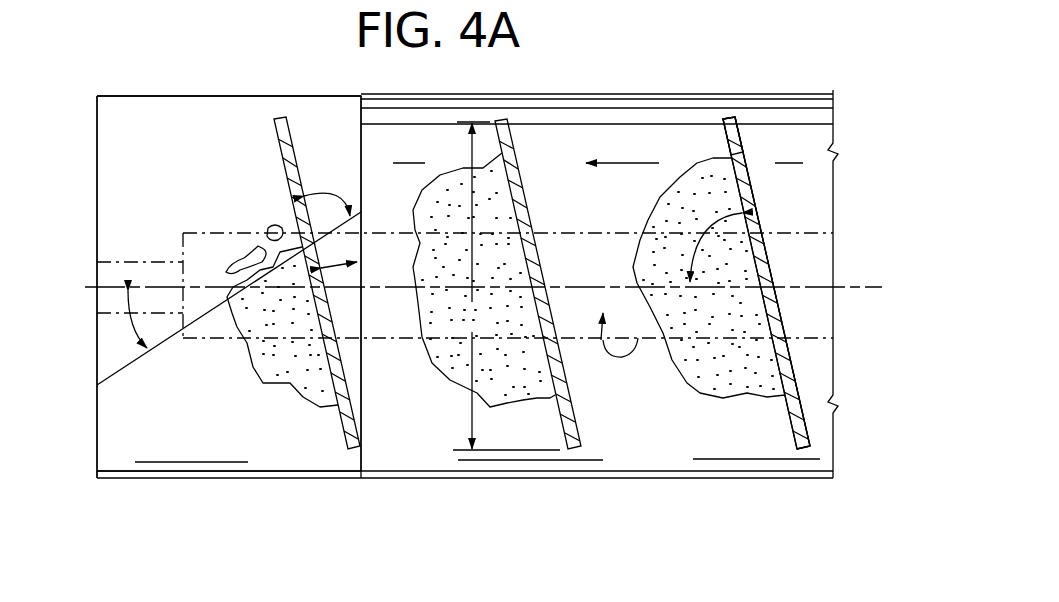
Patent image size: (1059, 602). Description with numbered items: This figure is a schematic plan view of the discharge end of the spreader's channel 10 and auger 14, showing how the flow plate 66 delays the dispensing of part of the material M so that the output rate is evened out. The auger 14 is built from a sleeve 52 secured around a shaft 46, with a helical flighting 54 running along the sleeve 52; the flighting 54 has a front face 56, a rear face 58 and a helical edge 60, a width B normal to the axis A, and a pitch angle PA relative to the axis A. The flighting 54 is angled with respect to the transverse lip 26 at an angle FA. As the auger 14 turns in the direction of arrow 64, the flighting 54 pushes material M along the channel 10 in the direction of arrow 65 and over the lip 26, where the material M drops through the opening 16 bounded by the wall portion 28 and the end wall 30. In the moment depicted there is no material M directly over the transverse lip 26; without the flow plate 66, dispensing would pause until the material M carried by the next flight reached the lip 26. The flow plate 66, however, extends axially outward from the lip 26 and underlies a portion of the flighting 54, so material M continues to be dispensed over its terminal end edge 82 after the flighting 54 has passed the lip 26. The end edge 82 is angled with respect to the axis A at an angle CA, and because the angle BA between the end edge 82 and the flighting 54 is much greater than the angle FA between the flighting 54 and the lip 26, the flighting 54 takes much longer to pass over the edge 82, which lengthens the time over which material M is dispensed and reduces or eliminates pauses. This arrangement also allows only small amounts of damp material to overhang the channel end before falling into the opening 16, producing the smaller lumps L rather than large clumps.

The channel 10 is at (693, 93).
The auger 14 is at (801, 446).
The opening 16 is at (143, 115).
The transverse lip 26 is at (361, 126).
The wall portion 28 is at (198, 95).
The end wall 30 is at (96, 135).
The shaft 46 is at (127, 265).
The sleeve 52 is at (790, 231).
The helical flighting 54 is at (752, 135).
The front face 56 is at (718, 162).
The rear face 58 is at (756, 195).
The helical edge 60 is at (724, 120).
The direction of rotation arrow 64 is at (623, 358).
The material movement arrow 65 is at (638, 160).
The flow plate 66 is at (105, 432).
The dispensing end edge 82 is at (127, 364).
The axis A is at (870, 283).
The width B is at (506, 286).
The angle between dispensing edge and flighting BA is at (338, 193).
The angle of end edge to axis CA is at (104, 320).
The angle between flighting and lip FA is at (344, 267).
The lumps L is at (273, 226).
The material M is at (293, 383).
The pitch angle PA is at (703, 245).